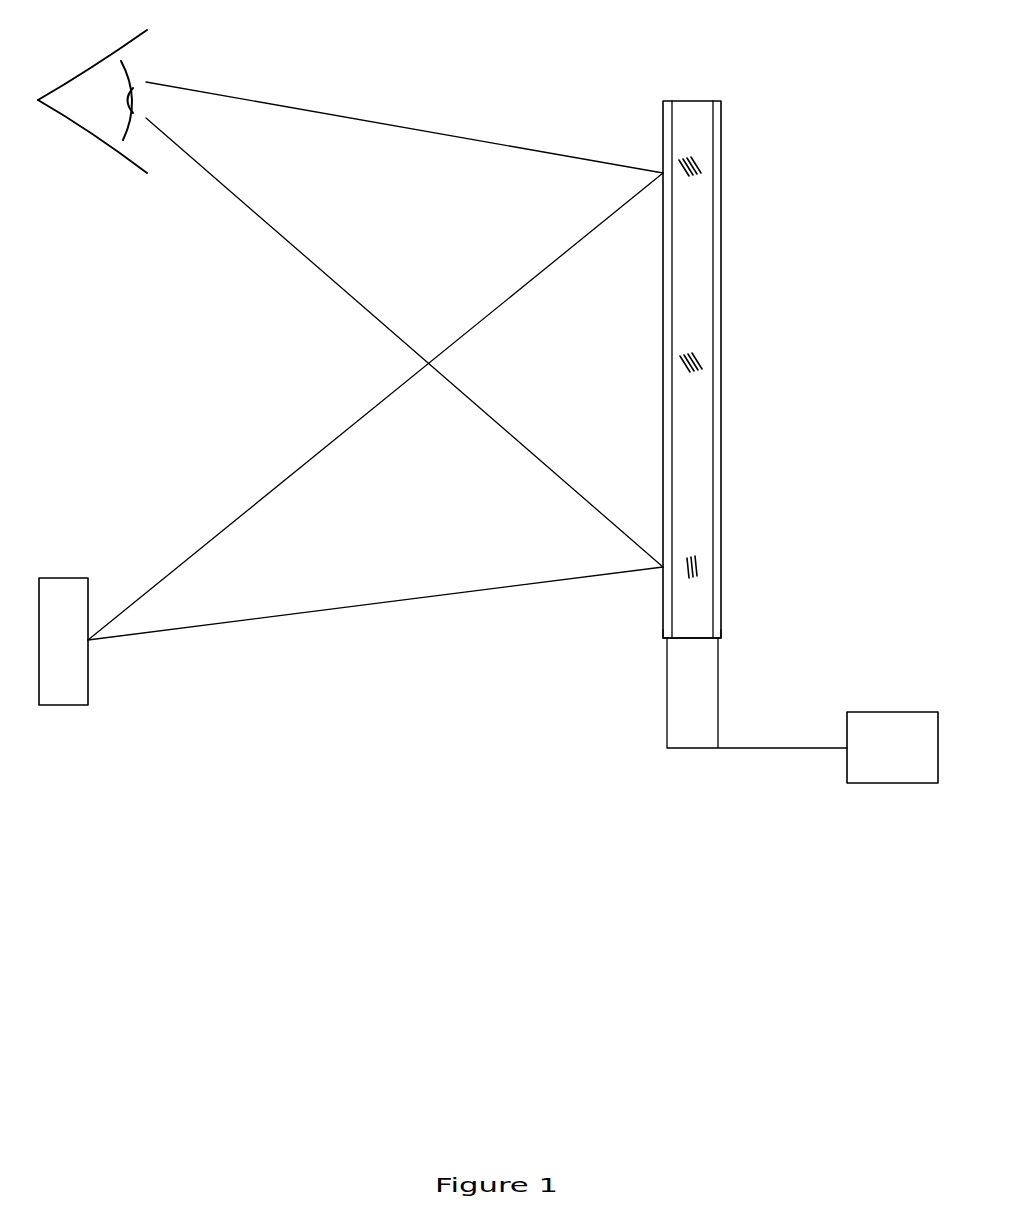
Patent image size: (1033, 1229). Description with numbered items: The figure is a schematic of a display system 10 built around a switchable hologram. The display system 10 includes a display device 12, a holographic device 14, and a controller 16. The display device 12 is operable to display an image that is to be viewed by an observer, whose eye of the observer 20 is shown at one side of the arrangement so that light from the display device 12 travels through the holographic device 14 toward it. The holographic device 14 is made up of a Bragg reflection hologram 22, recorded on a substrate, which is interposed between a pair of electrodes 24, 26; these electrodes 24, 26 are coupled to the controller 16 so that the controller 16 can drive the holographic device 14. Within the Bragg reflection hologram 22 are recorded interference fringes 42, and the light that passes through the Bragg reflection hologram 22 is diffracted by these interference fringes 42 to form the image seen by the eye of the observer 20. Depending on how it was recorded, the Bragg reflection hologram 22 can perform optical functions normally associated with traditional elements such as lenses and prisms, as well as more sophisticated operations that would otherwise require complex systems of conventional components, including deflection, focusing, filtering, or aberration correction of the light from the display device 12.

The display system 10 is at (552, 25).
The display device 12 is at (62, 707).
The holographic device 14 is at (722, 99).
The controller 16 is at (893, 712).
The eye of the observer 20 is at (80, 80).
The Bragg reflection hologram 22 is at (695, 113).
The electrode 24 is at (663, 608).
The electrode 26 is at (713, 590).
The interference fringes 42 is at (702, 167).